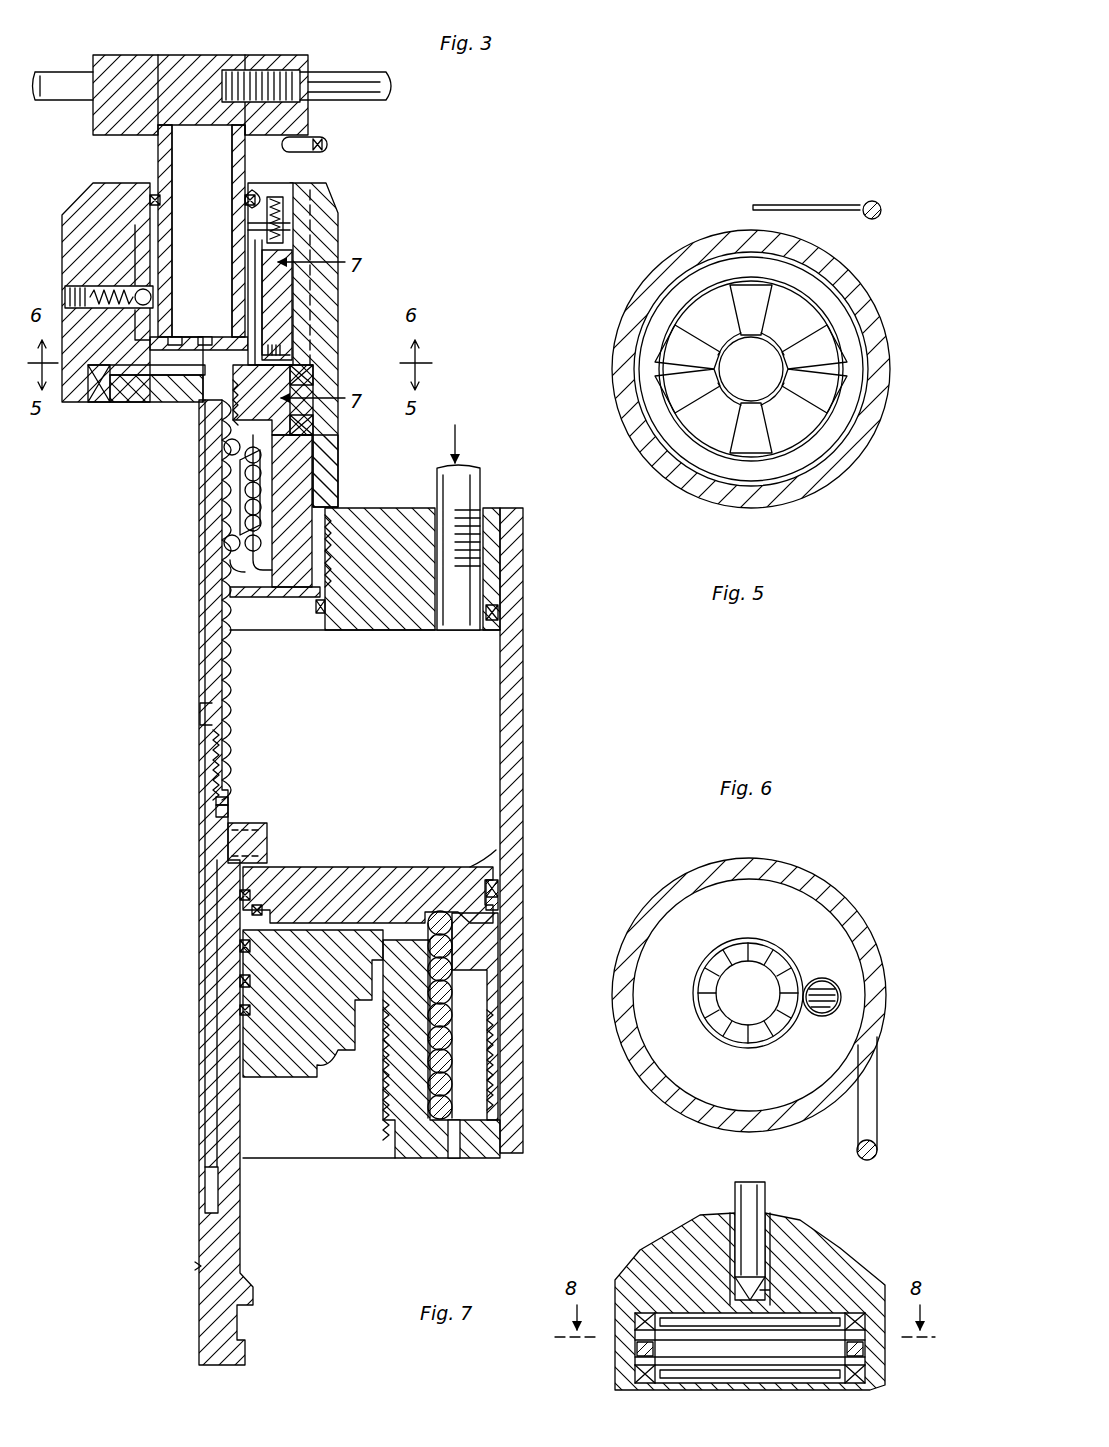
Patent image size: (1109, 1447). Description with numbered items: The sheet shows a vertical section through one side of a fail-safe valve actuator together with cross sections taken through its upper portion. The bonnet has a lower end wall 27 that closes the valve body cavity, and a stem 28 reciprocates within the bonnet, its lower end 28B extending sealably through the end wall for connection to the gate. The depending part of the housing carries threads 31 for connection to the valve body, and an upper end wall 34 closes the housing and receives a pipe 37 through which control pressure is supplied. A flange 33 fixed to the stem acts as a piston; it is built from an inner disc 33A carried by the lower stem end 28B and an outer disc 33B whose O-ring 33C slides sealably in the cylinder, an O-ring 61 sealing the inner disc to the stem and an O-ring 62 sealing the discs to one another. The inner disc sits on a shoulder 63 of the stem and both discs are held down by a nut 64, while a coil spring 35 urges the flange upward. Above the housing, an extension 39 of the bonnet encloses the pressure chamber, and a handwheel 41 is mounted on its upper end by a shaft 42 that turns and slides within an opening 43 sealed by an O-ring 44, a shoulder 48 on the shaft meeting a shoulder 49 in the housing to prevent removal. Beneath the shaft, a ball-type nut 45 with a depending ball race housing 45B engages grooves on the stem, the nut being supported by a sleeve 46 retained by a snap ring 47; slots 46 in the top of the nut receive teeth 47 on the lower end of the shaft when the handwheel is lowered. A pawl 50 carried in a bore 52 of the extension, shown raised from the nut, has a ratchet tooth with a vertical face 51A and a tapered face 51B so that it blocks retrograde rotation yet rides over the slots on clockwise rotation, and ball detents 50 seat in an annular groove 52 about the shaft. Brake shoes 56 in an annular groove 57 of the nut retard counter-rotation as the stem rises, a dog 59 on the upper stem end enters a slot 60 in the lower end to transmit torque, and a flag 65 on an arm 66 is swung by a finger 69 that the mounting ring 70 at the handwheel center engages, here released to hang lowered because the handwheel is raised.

In FIG. 3, the lower end wall 27 is at (292, 1077).
In FIG. 3, the stem 28 is at (212, 612).
In FIG. 5, the stem 28 is at (790, 370).
In FIG. 3, the lower end of stem 28B is at (243, 1255).
In FIG. 3, the threads 31 is at (390, 1135).
In FIG. 3, the flange 33 is at (400, 866).
In FIG. 3, the inner disc 33A is at (240, 980).
In FIG. 3, the outer disc 33B is at (500, 857).
In FIG. 3, the O-ring 33C is at (500, 890).
In FIG. 3, the upper end wall 34 is at (500, 505).
In FIG. 3, the coil spring 35 is at (455, 945).
In FIG. 3, the pipe 37 is at (480, 470).
In FIG. 3, the bonnet extension 39 is at (338, 225).
In FIG. 5, the bonnet extension 39 is at (870, 400).
In FIG. 3, the handwheel 41 is at (396, 96).
In FIG. 3, the shaft 42 is at (158, 140).
In FIG. 3, the opening 43 is at (220, 180).
In FIG. 3, the O-ring 44 is at (150, 195).
In FIG. 3, the nut 45 is at (305, 375).
In FIG. 3, the ball race housing 45B is at (300, 495).
In FIG. 3, the sleeve 46 is at (320, 468).
In FIG. 5, the sleeve 46 is at (812, 335).
In FIG. 7, the sleeve 46 is at (820, 1300).
In FIG. 3, the snap ring 47 is at (185, 385).
In FIG. 6, the snap ring 47 is at (748, 943).
In FIG. 3, the shoulder 48 is at (145, 215).
In FIG. 3, the shoulder 49 is at (140, 235).
In FIG. 3, the pawl 50 is at (150, 290).
In FIG. 7, the pawl 50 is at (765, 1186).
In FIG. 6, the vertical face 51A is at (833, 995).
In FIG. 7, the vertical face 51A is at (770, 1295).
In FIG. 6, the tapered face 51B is at (820, 1015).
In FIG. 7, the tapered face 51B is at (755, 1330).
In FIG. 3, the annular groove 52 is at (262, 310).
In FIG. 7, the brake shoes 56 is at (635, 1348).
In FIG. 7, the annular groove 57 is at (865, 1348).
In FIG. 3, the dog 59 is at (230, 812).
In FIG. 3, the slot 60 is at (230, 803).
In FIG. 3, the O-ring 61 is at (238, 895).
In FIG. 3, the O-ring 62 is at (250, 912).
In FIG. 3, the shoulder 63 is at (240, 946).
In FIG. 3, the nut 64 is at (268, 840).
In FIG. 3, the flag 65 is at (200, 483).
In FIG. 5, the flag 65 is at (820, 205).
In FIG. 5, the arm 66 is at (877, 202).
In FIG. 6, the arm 66 is at (878, 1108).
In FIG. 3, the finger 69 is at (320, 135).
In FIG. 3, the mounting ring 70 is at (295, 70).